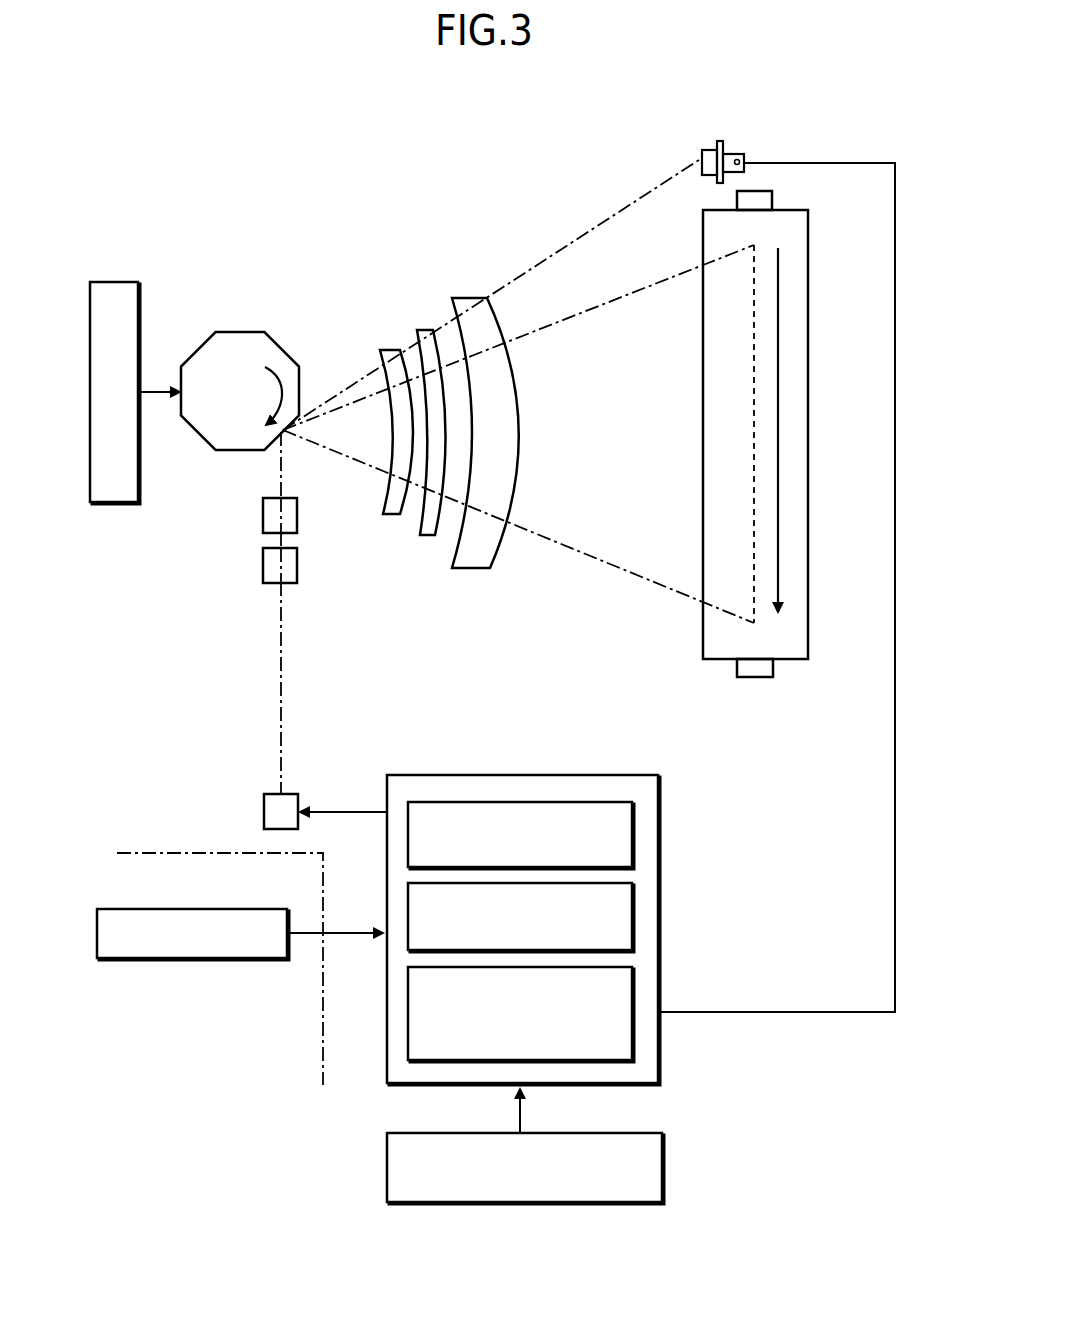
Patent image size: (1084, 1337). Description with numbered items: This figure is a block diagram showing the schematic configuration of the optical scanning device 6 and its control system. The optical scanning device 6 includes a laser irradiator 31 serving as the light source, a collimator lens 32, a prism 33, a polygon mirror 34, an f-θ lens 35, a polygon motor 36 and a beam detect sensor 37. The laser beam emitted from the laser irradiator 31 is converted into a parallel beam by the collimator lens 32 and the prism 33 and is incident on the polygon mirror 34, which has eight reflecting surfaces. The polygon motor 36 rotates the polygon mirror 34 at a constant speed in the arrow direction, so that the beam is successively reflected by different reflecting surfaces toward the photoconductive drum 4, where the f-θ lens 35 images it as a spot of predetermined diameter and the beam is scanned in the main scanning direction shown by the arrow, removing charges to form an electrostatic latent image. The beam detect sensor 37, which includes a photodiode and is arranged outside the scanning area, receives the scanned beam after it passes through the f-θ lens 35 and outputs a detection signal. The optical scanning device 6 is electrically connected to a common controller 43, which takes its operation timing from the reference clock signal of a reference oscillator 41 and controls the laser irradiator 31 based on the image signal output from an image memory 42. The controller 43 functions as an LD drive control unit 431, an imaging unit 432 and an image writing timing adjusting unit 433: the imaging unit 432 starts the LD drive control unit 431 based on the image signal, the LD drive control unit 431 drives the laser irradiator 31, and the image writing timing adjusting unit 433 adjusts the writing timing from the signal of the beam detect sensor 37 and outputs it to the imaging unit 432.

The photoconductive drum 4 is at (808, 628).
The optical scanning device 6 is at (598, 165).
The laser irradiator 31 is at (264, 805).
The collimator lens 32 is at (263, 560).
The prism 33 is at (263, 510).
The polygon mirror 34 is at (243, 332).
The f-θ lens 35 is at (422, 285).
The polygon motor 36 is at (113, 282).
The beam detect sensor 37 is at (735, 152).
The reference oscillator 41 is at (663, 1145).
The image memory 42 is at (238, 909).
The controller 43 is at (625, 775).
The LD drive control unit 431 is at (632, 843).
The imaging unit 432 is at (632, 917).
The image writing timing adjusting unit 433 is at (632, 973).